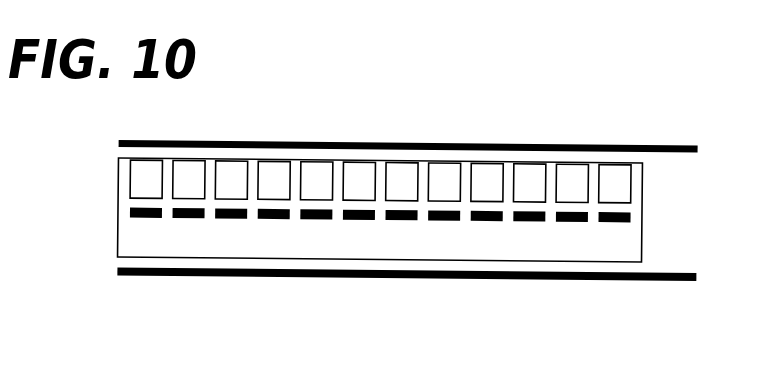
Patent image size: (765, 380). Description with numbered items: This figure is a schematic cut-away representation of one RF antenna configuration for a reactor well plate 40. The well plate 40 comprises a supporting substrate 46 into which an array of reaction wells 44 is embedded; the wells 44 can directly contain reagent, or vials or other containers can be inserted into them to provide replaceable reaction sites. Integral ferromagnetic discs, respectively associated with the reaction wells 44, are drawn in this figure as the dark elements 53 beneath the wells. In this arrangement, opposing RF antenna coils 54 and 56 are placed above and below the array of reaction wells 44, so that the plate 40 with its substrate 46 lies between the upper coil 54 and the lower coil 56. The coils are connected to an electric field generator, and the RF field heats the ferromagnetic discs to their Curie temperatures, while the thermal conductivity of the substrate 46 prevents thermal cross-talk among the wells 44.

The well plate 40 is at (528, 96).
The reaction wells 44 is at (183, 184).
The supporting substrate 46 is at (645, 217).
The electrodes 53 is at (489, 222).
The RF antenna coil 54 is at (687, 143).
The RF antenna coil 56 is at (672, 283).